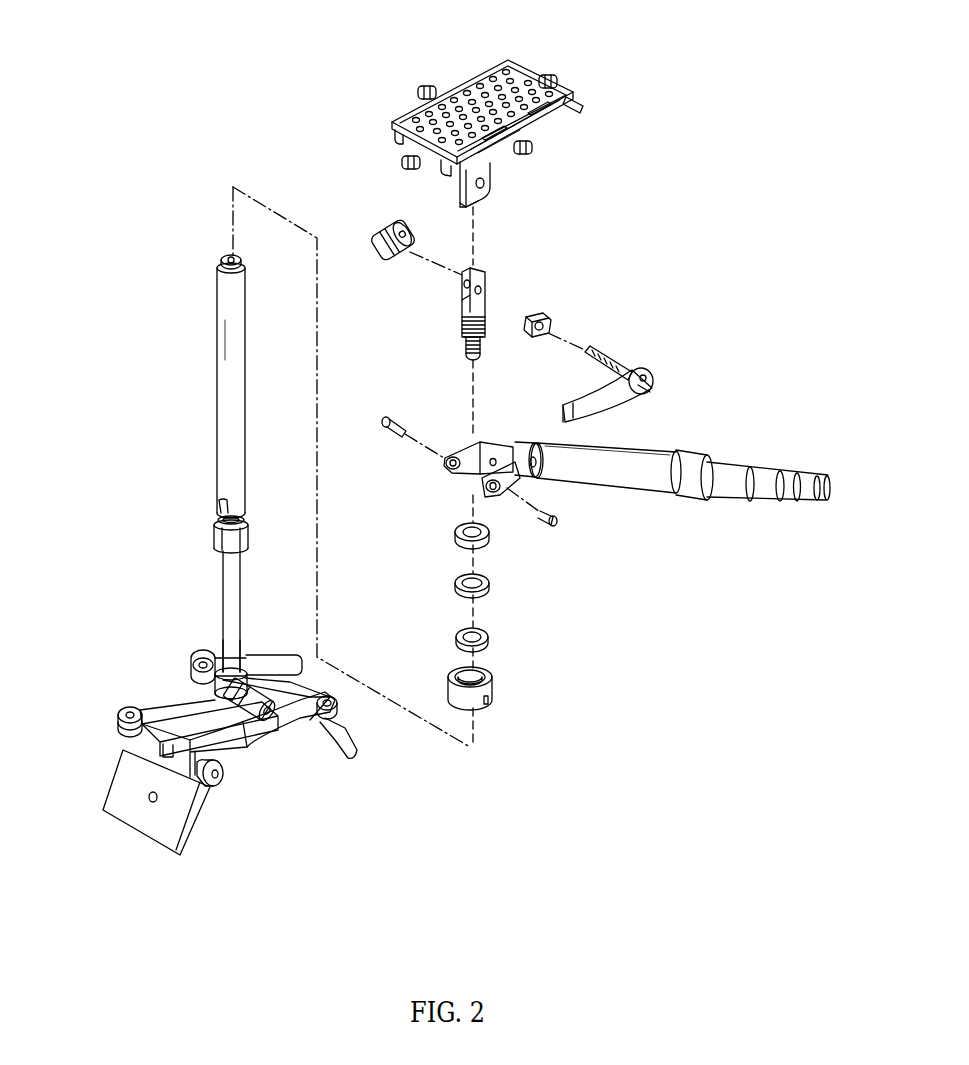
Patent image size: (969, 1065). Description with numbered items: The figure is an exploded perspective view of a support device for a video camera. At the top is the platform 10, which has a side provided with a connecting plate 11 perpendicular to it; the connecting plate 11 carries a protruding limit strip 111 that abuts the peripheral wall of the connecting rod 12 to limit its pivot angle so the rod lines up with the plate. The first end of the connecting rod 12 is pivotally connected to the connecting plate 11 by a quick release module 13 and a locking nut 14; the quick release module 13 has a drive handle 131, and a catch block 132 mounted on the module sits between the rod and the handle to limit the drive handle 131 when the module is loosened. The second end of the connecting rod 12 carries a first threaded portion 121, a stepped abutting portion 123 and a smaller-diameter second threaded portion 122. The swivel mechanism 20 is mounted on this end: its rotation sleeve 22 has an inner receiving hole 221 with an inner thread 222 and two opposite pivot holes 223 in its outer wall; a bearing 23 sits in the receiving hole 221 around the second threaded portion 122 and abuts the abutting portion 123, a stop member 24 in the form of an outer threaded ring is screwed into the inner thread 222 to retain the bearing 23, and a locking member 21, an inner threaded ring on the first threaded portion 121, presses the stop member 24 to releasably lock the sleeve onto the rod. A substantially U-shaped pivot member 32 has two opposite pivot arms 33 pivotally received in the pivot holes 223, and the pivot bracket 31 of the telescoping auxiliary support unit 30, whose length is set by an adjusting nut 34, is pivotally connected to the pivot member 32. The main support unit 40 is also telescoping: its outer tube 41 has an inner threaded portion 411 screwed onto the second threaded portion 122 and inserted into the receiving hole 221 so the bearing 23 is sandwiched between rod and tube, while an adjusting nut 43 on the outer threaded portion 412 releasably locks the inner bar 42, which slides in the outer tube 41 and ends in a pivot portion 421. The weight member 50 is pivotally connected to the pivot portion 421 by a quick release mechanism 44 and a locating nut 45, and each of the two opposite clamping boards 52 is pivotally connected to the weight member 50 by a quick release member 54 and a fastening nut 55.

The platform 10 is at (545, 61).
The connecting plate 11 is at (490, 180).
The protruding limit strip 111 is at (480, 201).
The connecting rod 12 is at (485, 275).
The first threaded portion 121 is at (462, 315).
The second threaded portion 122 is at (465, 352).
The stepped abutting portion 123 is at (465, 342).
The quick release module 13 is at (615, 370).
The drive handle 131 is at (627, 405).
The catch block 132 is at (547, 313).
The locking nut 14 is at (378, 218).
The swivel mechanism 20 is at (573, 628).
The locking member 21 is at (488, 535).
The rotation sleeve 22 is at (495, 688).
The receiving hole 221 is at (455, 670).
The inner thread 222 is at (467, 668).
The pivot holes 223 is at (490, 697).
The bearing 23 is at (490, 637).
The stop member 24 is at (490, 580).
The auxiliary support unit 30 is at (647, 497).
The pivot bracket 31 is at (523, 472).
The pivot member 32 is at (503, 437).
The pivot arms 33 is at (450, 470).
The adjusting nut 34 is at (697, 473).
The main support unit 40 is at (188, 429).
The outer tube 41 is at (222, 365).
The inner threaded portion 411 is at (231, 256).
The outer threaded portion 412 is at (218, 497).
The inner bar 42 is at (230, 593).
The pivot portion 421 is at (235, 645).
The adjusting nut 43 is at (215, 536).
The quick release mechanism 44 is at (188, 665).
The locating nut 45 is at (272, 715).
The weight member 50 is at (240, 770).
The clamping boards 52 is at (152, 822).
The quick release member 54 is at (128, 713).
The fastening nut 55 is at (213, 782).